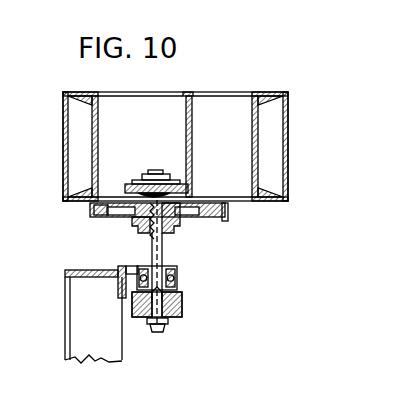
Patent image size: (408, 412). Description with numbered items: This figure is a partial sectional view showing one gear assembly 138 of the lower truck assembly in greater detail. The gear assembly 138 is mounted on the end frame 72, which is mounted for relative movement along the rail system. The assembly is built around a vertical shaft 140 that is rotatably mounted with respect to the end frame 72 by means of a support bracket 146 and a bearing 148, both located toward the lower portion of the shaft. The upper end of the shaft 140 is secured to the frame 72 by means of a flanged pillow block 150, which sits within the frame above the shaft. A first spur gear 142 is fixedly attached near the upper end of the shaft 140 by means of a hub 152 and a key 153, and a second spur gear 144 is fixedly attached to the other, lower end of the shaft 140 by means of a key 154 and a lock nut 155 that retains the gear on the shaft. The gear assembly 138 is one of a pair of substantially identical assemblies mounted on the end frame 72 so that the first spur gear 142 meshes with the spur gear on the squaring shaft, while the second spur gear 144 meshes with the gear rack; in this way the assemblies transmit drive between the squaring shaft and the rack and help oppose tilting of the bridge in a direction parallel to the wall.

The frame 72 is at (288, 150).
The gear assembly 138 is at (244, 249).
The shaft 140 is at (162, 259).
The first spur gear 142 is at (225, 213).
The second spur gear 144 is at (183, 306).
The support bracket 146 is at (178, 270).
The bearing 148 is at (178, 282).
The flanged pillow block 150 is at (140, 180).
The hub 152 is at (138, 229).
The key 153 is at (112, 207).
The key 154 is at (134, 320).
The lock nut 155 is at (168, 322).